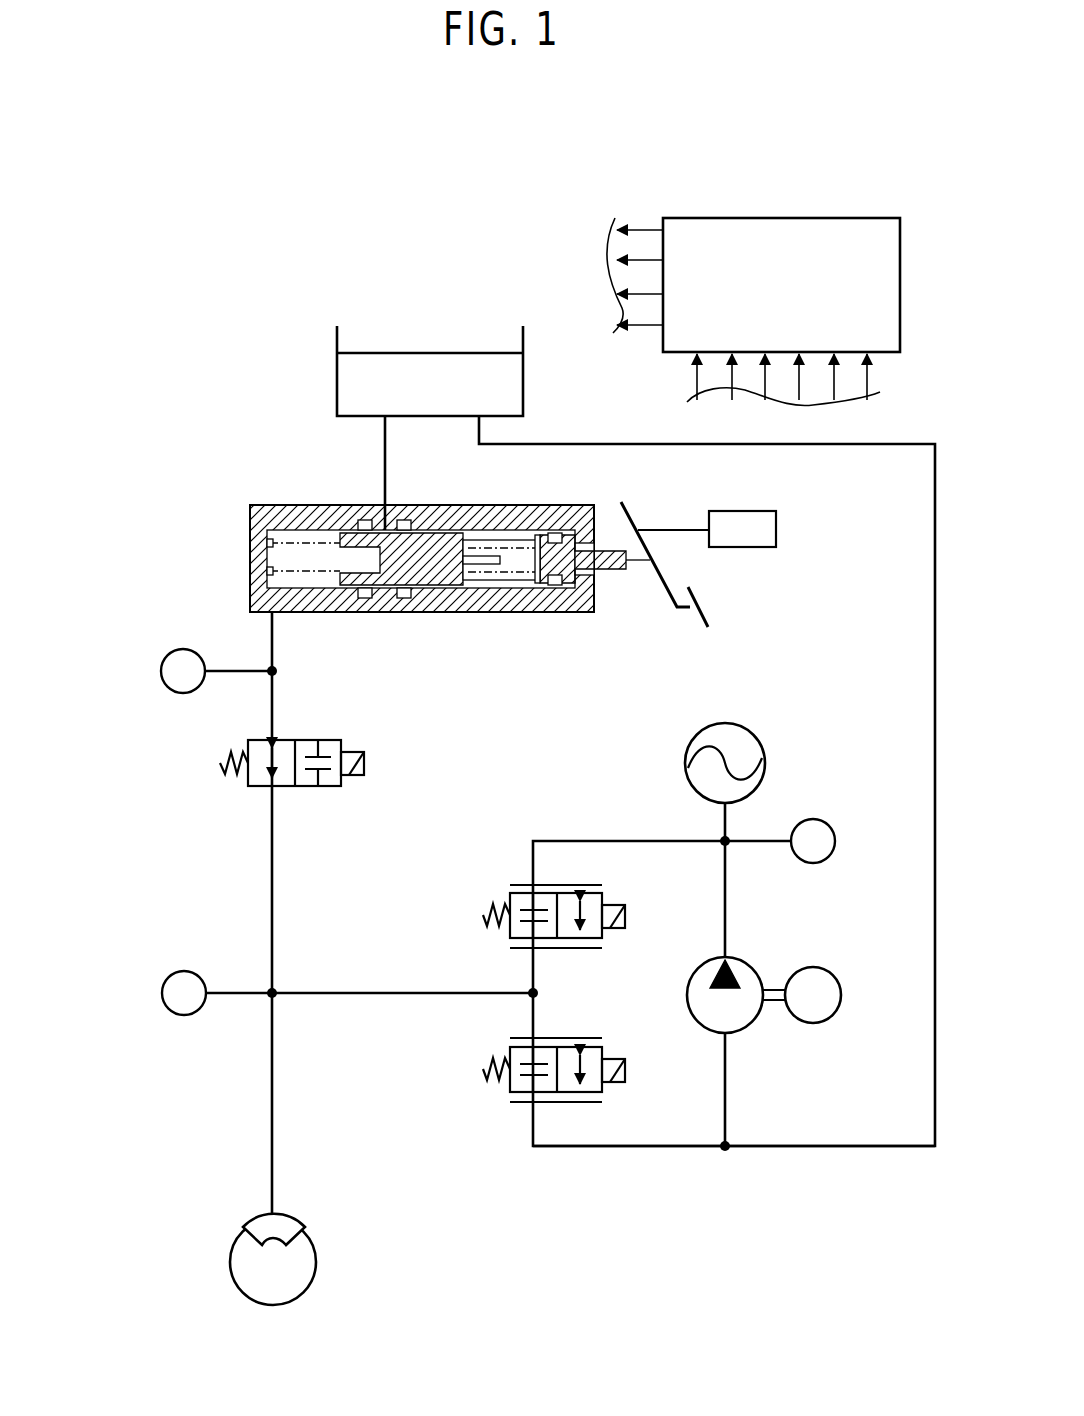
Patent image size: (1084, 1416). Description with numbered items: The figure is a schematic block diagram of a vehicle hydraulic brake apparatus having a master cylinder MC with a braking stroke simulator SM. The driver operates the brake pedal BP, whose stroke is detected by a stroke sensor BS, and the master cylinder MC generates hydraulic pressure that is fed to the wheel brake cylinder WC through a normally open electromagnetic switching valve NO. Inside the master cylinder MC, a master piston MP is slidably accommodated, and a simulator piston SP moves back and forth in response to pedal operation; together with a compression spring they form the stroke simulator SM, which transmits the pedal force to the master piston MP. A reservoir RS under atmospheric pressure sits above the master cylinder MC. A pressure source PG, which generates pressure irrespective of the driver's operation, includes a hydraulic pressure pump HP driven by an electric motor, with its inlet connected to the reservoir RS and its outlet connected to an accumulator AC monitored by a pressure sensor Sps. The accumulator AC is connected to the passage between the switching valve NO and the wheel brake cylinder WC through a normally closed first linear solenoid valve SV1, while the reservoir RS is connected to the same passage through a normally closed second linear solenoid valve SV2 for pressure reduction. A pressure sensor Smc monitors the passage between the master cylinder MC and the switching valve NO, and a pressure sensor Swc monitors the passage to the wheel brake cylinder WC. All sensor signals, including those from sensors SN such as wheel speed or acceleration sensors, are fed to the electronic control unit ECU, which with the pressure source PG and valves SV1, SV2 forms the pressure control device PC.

The electronic control unit ECU is at (723, 218).
The sensors SN is at (743, 327).
The reservoir RS is at (523, 376).
The master cylinder MC is at (450, 564).
The master piston MP is at (424, 580).
The simulator piston SP is at (611, 570).
The stroke simulator SM is at (539, 620).
The brake pedal BP is at (708, 626).
The stroke sensor BS is at (776, 527).
The pressure sensor Smc is at (160, 669).
The normally open electromagnetic switching valve NO is at (336, 740).
The pressure source PG is at (700, 823).
The accumulator AC is at (765, 760).
The pressure sensor Sps is at (833, 832).
The hydraulic pressure pump HP is at (760, 965).
The first linear solenoid valve SV1 is at (525, 886).
The second linear solenoid valve SV2 is at (525, 1040).
The pressure control device PC is at (570, 1162).
The pressure sensor Swc is at (162, 990).
The wheel brake cylinder WC is at (260, 1218).